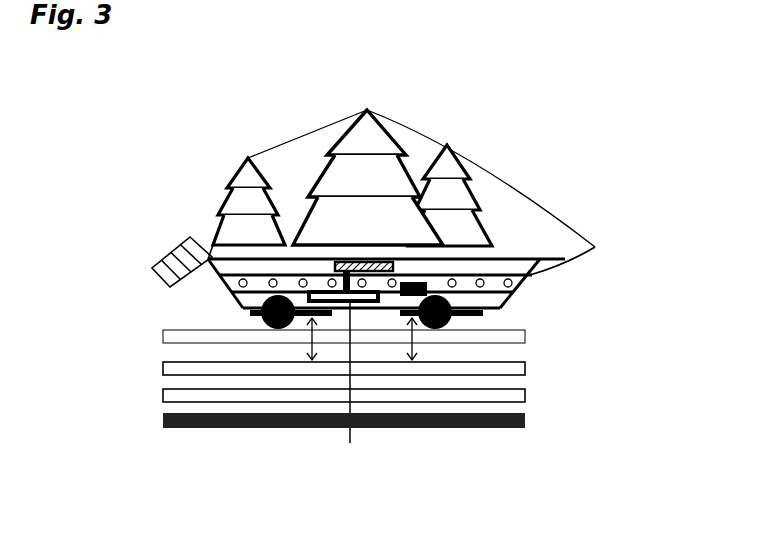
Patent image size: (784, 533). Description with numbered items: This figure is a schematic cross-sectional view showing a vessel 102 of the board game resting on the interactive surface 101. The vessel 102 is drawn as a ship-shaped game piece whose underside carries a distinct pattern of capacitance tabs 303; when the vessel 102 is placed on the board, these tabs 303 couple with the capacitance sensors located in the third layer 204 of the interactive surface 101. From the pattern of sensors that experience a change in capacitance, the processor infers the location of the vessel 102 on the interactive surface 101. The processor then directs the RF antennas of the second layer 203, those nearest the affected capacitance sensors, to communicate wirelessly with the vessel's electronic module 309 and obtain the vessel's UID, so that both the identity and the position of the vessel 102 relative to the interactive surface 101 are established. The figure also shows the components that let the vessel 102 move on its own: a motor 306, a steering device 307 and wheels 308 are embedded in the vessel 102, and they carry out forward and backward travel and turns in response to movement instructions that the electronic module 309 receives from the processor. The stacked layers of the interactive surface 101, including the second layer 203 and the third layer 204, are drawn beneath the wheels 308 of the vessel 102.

The interactive surface 101 is at (445, 379).
The vessel 102 is at (523, 185).
The second layer 203 is at (480, 395).
The third layer 204 is at (480, 368).
The capacitance tabs 303 is at (252, 313).
The motor 306 is at (354, 392).
The steering device 307 is at (420, 282).
The wheels 308 is at (270, 326).
The electronic module 309 is at (332, 262).